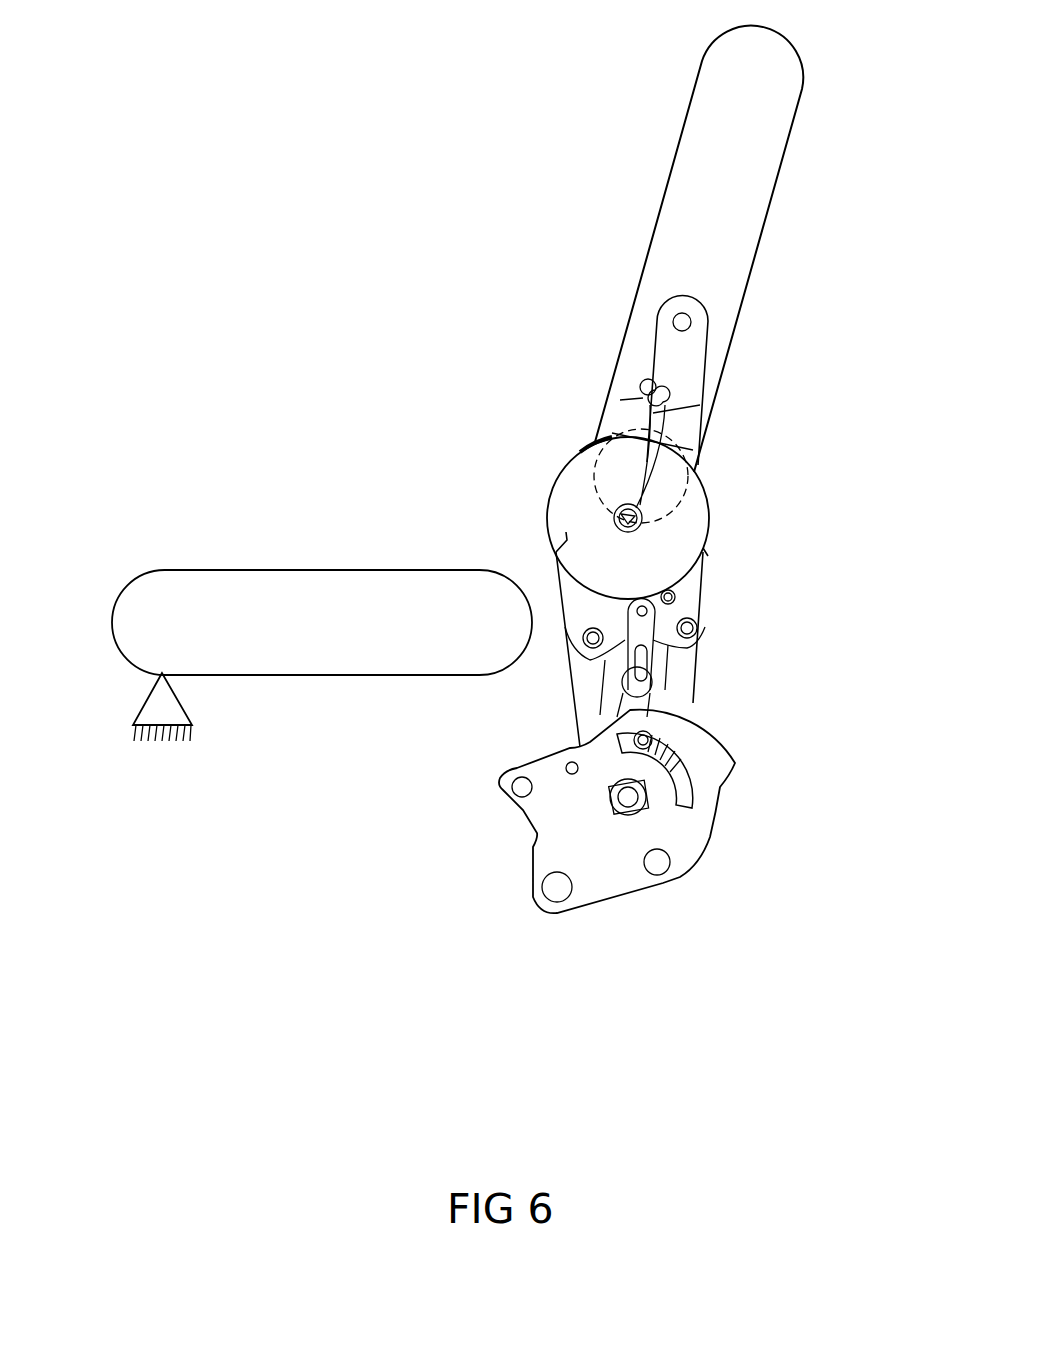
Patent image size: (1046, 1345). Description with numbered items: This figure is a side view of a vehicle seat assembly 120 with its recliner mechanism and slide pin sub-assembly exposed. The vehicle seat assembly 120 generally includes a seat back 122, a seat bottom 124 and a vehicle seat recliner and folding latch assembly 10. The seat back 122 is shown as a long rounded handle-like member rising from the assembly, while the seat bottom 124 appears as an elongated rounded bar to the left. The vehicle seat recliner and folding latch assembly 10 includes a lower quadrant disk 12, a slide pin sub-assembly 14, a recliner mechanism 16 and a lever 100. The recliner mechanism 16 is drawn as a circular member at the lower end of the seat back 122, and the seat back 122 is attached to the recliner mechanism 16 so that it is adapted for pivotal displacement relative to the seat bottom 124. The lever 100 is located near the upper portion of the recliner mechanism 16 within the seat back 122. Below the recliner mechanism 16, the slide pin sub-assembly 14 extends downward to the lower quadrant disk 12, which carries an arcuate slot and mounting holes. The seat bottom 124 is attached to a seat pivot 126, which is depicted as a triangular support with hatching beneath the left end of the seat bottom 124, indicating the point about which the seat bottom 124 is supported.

The vehicle seat recliner and folding latch assembly 10 is at (805, 526).
The lower quadrant disk 12 is at (740, 729).
The slide pin sub-assembly 14 is at (716, 626).
The recliner mechanism 16 is at (712, 492).
The lever 100 is at (667, 403).
The vehicle seat assembly 120 is at (385, 188).
The seat back 122 is at (724, 214).
The seat bottom 124 is at (322, 640).
The seat pivot 126 is at (148, 700).